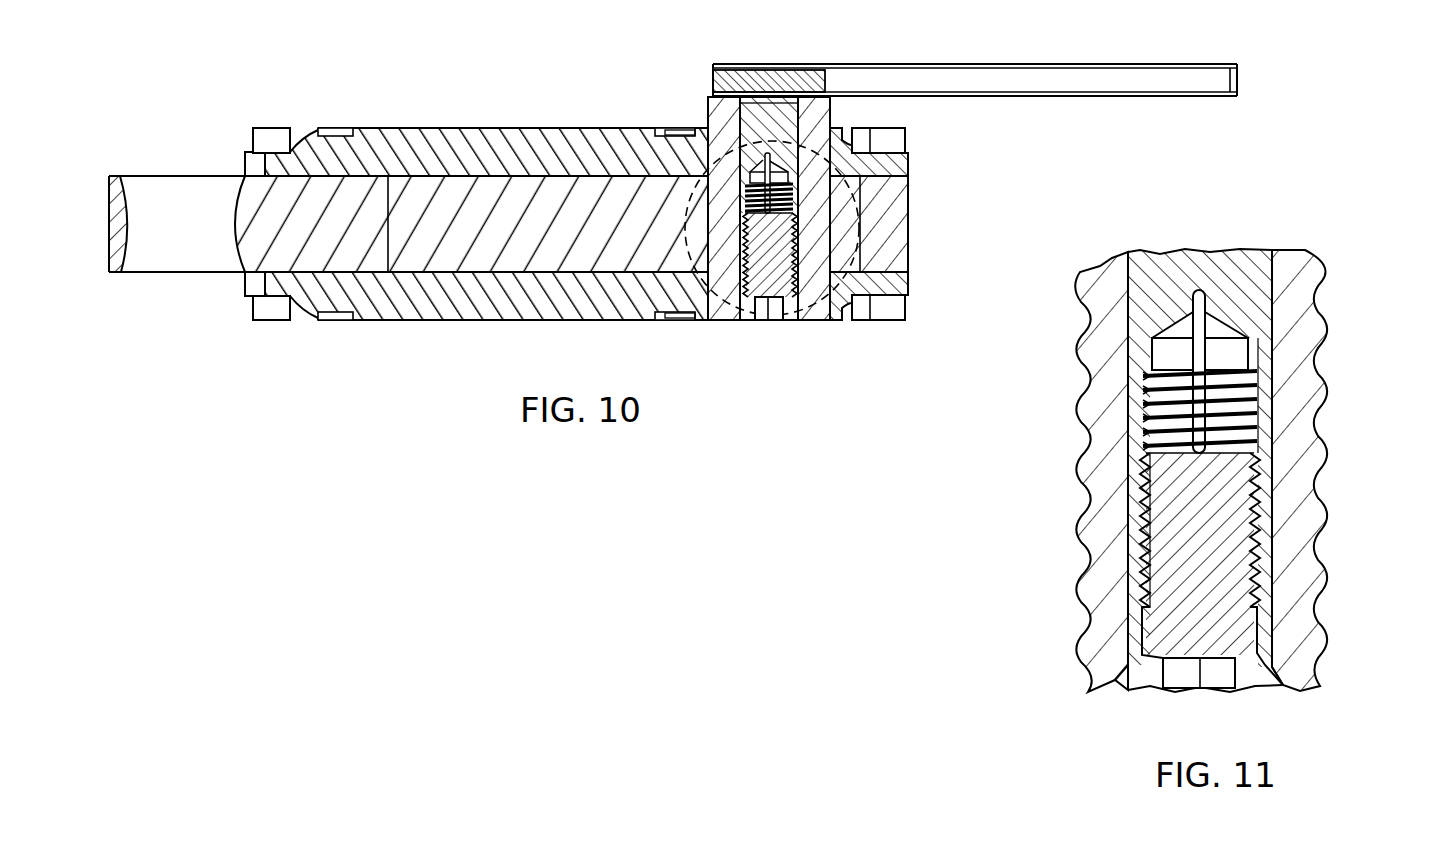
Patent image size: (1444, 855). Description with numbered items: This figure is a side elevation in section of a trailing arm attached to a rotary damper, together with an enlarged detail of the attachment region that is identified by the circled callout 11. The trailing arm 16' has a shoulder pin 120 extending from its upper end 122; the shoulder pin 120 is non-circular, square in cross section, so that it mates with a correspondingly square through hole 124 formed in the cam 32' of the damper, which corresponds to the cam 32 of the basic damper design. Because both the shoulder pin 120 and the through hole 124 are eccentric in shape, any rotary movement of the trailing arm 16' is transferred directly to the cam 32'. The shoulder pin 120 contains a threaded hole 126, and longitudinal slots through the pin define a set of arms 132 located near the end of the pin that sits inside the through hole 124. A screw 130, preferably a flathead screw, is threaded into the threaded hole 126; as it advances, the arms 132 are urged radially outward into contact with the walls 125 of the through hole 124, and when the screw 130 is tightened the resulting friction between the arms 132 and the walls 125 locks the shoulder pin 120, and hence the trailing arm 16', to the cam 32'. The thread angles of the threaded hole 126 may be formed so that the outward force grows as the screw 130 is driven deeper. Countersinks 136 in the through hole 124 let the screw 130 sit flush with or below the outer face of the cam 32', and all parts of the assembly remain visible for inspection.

In FIG. 10, the cam 32 is at (408, 202).
In FIG. 11, the cam 32' is at (1238, 471).
In FIG. 10, the shoulder pin 120 is at (750, 76).
In FIG. 11, the shoulder pin 120 is at (1197, 252).
In FIG. 10, the upper end 122 is at (904, 64).
In FIG. 10, the trailing arm 16' is at (975, 53).
In FIG. 10, the through hole 124 is at (740, 297).
In FIG. 11, the through hole 124 is at (1135, 602).
In FIG. 10, the walls 125 is at (720, 130).
In FIG. 11, the walls 125 is at (1262, 343).
In FIG. 10, the threaded hole 126 is at (790, 193).
In FIG. 11, the threaded hole 126 is at (1153, 390).
In FIG. 10, the screw 130 is at (792, 305).
In FIG. 11, the screw 130 is at (1258, 690).
In FIG. 10, the arms 132 is at (745, 222).
In FIG. 11, the arms 132 is at (1137, 488).
In FIG. 10, the countersinks 136 is at (818, 74).
In FIG. 10, the detail view circle (FIG. 11) 11 is at (774, 322).